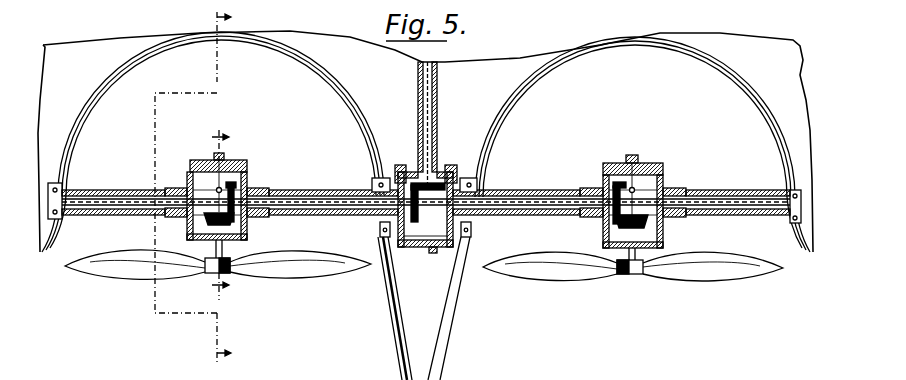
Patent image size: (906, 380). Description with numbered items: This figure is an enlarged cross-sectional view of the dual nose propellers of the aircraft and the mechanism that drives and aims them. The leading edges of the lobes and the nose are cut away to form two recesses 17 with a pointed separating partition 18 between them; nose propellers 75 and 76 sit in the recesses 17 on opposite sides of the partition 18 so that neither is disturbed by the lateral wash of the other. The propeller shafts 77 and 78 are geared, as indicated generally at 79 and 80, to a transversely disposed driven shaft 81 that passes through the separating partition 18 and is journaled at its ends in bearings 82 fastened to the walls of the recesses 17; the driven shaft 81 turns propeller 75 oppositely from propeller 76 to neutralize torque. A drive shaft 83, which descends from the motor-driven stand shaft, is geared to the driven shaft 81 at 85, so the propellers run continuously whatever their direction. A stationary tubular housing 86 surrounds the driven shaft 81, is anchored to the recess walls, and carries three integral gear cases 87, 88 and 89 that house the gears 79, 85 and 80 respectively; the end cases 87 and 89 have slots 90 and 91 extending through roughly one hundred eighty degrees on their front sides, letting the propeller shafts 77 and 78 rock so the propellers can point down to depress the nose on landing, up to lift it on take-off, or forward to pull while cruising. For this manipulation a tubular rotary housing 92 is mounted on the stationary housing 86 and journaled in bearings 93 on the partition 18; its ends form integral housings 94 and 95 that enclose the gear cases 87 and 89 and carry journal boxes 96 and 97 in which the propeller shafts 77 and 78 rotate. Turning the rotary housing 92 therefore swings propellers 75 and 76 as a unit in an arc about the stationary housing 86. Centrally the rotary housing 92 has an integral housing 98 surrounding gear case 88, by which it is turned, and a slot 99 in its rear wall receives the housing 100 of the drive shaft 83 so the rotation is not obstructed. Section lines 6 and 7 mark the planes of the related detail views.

The section line 6- 6 is at (193, 186).
The section line 7- 7 is at (220, 213).
The recesses 17 is at (100, 86).
The separating partition 18 is at (412, 328).
The nose propeller 75 is at (320, 270).
The nose propeller 76 is at (720, 279).
The propeller shaft 77 is at (225, 259).
The propeller shaft 78 is at (645, 262).
The gears 79 is at (248, 176).
The gears 80 is at (604, 186).
The driven shaft 81 is at (520, 200).
The bearings 82 is at (63, 192).
The drive shaft 83 is at (438, 119).
The gears 85 is at (413, 248).
The stationary tubular housing 86 is at (560, 217).
The gear case 87 is at (240, 161).
The gear case 88 is at (445, 251).
The gear case 89 is at (650, 165).
The slot 90 is at (210, 216).
The slot 91 is at (660, 223).
The tubular rotary housing 92 is at (372, 219).
The bearings 93 is at (372, 186).
The housing 94 is at (192, 160).
The housing 95 is at (665, 170).
The journal box 96 is at (205, 263).
The journal box 97 is at (615, 263).
The housing 98 is at (451, 165).
The slot 99 is at (400, 165).
The housing 100 is at (418, 96).